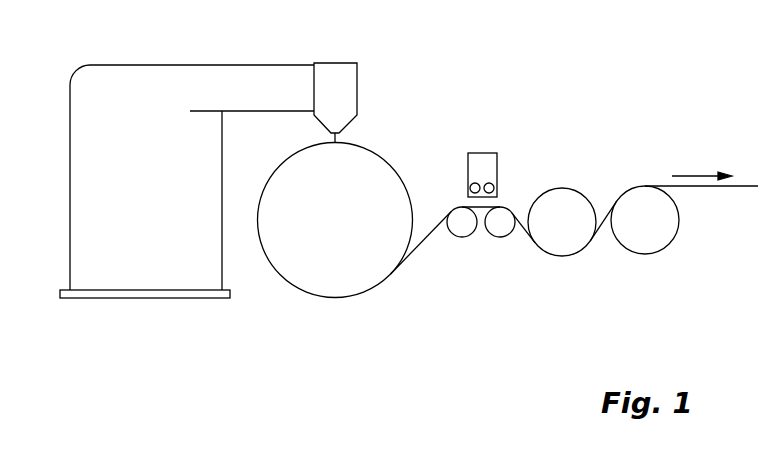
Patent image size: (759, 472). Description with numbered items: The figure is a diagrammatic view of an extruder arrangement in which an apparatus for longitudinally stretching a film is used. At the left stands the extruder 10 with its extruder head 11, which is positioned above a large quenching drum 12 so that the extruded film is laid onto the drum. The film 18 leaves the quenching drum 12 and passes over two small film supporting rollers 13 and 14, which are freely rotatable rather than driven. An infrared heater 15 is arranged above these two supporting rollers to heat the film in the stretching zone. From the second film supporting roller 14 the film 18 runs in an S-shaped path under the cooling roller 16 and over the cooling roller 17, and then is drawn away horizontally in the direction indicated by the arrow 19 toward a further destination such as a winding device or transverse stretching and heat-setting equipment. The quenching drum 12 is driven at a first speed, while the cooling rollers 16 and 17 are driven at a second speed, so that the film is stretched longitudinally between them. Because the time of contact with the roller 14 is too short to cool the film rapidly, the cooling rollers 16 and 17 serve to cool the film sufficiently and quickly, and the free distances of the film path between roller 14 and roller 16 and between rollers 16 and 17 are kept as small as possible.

The extruder 10 is at (198, 73).
The extruder head 11 is at (352, 90).
The quenching drum 12 is at (375, 165).
The film supporting roller 13 is at (470, 230).
The film supporting roller 14 is at (507, 230).
The infrared heater 15 is at (487, 160).
The cooling roller 16 is at (567, 198).
The cooling roller 17 is at (665, 232).
The film 18 is at (413, 253).
The arrow 19 is at (702, 165).